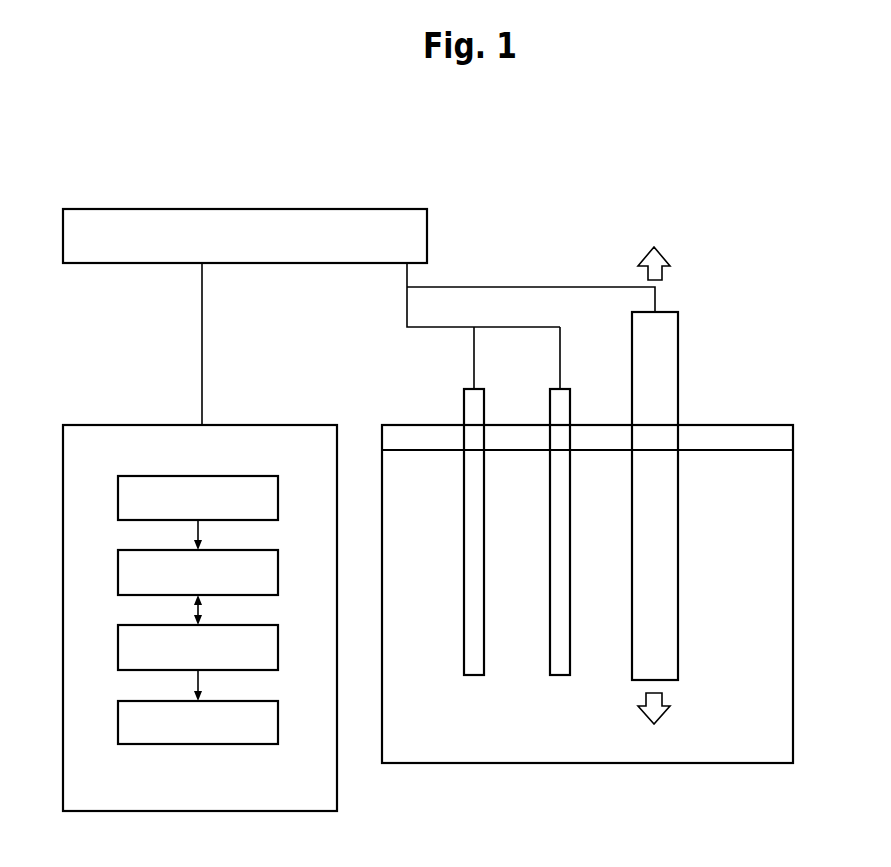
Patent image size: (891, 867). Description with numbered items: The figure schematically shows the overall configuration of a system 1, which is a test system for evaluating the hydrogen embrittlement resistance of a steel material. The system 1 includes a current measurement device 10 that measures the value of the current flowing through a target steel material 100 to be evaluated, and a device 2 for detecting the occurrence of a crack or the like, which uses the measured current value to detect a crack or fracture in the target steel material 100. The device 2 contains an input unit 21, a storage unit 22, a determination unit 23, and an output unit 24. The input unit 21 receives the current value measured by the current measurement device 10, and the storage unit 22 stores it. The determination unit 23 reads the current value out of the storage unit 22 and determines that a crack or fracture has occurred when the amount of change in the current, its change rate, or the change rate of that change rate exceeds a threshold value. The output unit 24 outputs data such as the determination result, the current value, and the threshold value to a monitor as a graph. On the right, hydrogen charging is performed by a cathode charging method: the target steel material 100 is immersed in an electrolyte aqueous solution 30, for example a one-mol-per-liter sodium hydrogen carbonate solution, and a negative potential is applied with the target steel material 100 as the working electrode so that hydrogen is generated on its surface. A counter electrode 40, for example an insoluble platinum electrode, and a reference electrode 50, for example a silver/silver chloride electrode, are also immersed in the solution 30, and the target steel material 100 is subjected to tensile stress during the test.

The system 1 is at (388, 134).
The device for detecting occurrence of crack or the like 2 is at (126, 424).
The current measurement device 10 is at (252, 208).
The input unit 21 is at (226, 475).
The storage unit 22 is at (226, 549).
The determination unit 23 is at (226, 623).
The output unit 24 is at (226, 699).
The electrolyte aqueous solution 30 is at (792, 587).
The counter electrode 40 is at (475, 587).
The reference electrode 50 is at (560, 587).
The target steel material 100 is at (667, 587).